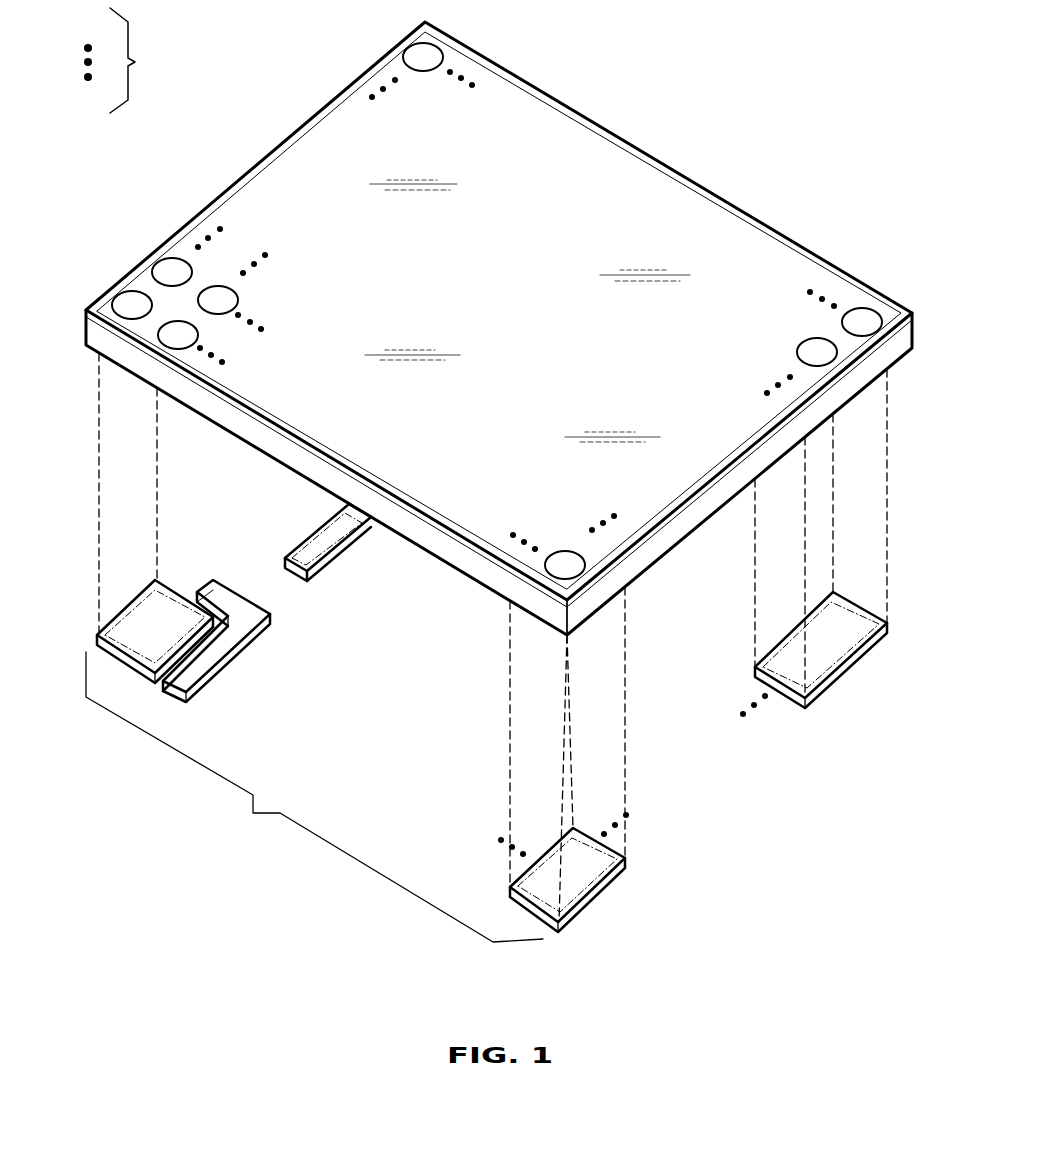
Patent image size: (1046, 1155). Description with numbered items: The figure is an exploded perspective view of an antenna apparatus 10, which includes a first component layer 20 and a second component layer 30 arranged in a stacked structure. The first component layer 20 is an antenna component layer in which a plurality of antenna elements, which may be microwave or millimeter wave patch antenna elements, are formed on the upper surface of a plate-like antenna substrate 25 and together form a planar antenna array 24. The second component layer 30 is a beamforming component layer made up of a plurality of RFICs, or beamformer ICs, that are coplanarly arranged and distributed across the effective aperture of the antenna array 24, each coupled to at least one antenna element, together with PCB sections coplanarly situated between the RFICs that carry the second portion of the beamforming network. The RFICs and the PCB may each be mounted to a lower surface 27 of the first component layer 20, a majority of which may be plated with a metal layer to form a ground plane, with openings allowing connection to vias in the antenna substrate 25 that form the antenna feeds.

The antenna apparatus 10 is at (722, 49).
The first component layer 20 is at (499, 328).
The planar antenna array 24 is at (117, 60).
The antenna substrate 25 is at (908, 342).
The lower surface 27 is at (401, 472).
The second component layer 30 is at (526, 723).